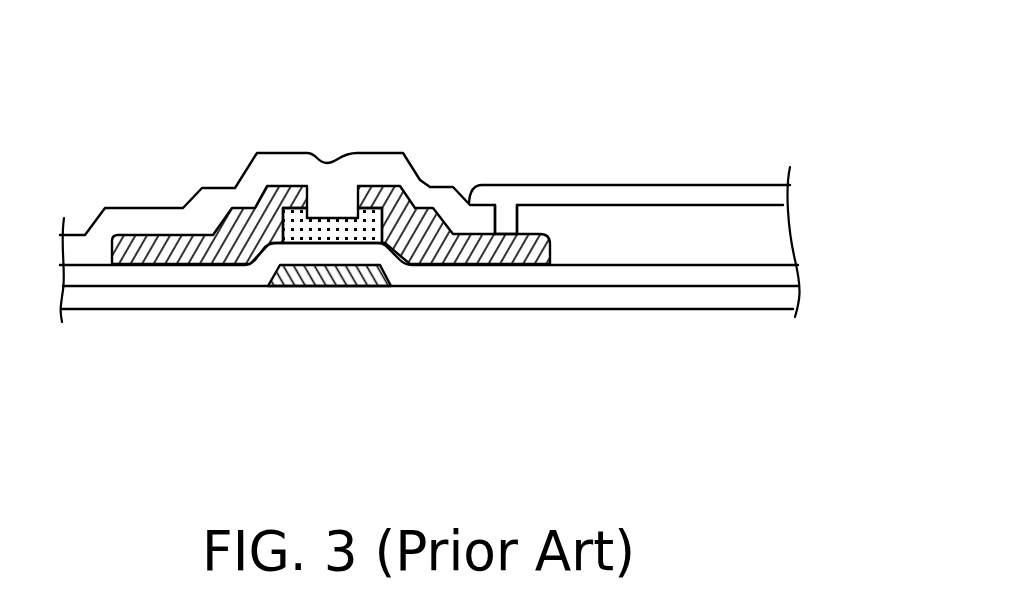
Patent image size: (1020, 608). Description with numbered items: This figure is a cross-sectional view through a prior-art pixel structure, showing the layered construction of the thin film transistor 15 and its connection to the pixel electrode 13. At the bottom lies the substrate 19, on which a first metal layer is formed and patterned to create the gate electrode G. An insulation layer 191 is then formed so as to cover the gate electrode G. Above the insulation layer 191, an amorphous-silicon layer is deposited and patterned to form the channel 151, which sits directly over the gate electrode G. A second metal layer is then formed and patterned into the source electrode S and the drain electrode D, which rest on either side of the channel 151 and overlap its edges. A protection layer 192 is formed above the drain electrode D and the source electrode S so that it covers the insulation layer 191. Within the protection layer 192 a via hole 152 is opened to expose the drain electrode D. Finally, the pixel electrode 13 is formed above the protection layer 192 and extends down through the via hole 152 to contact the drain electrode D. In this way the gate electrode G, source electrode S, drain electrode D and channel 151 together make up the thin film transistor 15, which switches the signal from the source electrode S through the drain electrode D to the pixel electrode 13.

The thin film transistor 15 is at (298, 104).
The channel 151 is at (407, 268).
The via hole 152 is at (505, 207).
The pixel electrode 13 is at (623, 194).
The substrate 19 is at (772, 295).
The insulation layer 191 is at (697, 272).
The protection layer 192 is at (140, 218).
The source electrode S is at (180, 266).
The gate electrode G is at (327, 286).
The drain electrode D is at (490, 248).